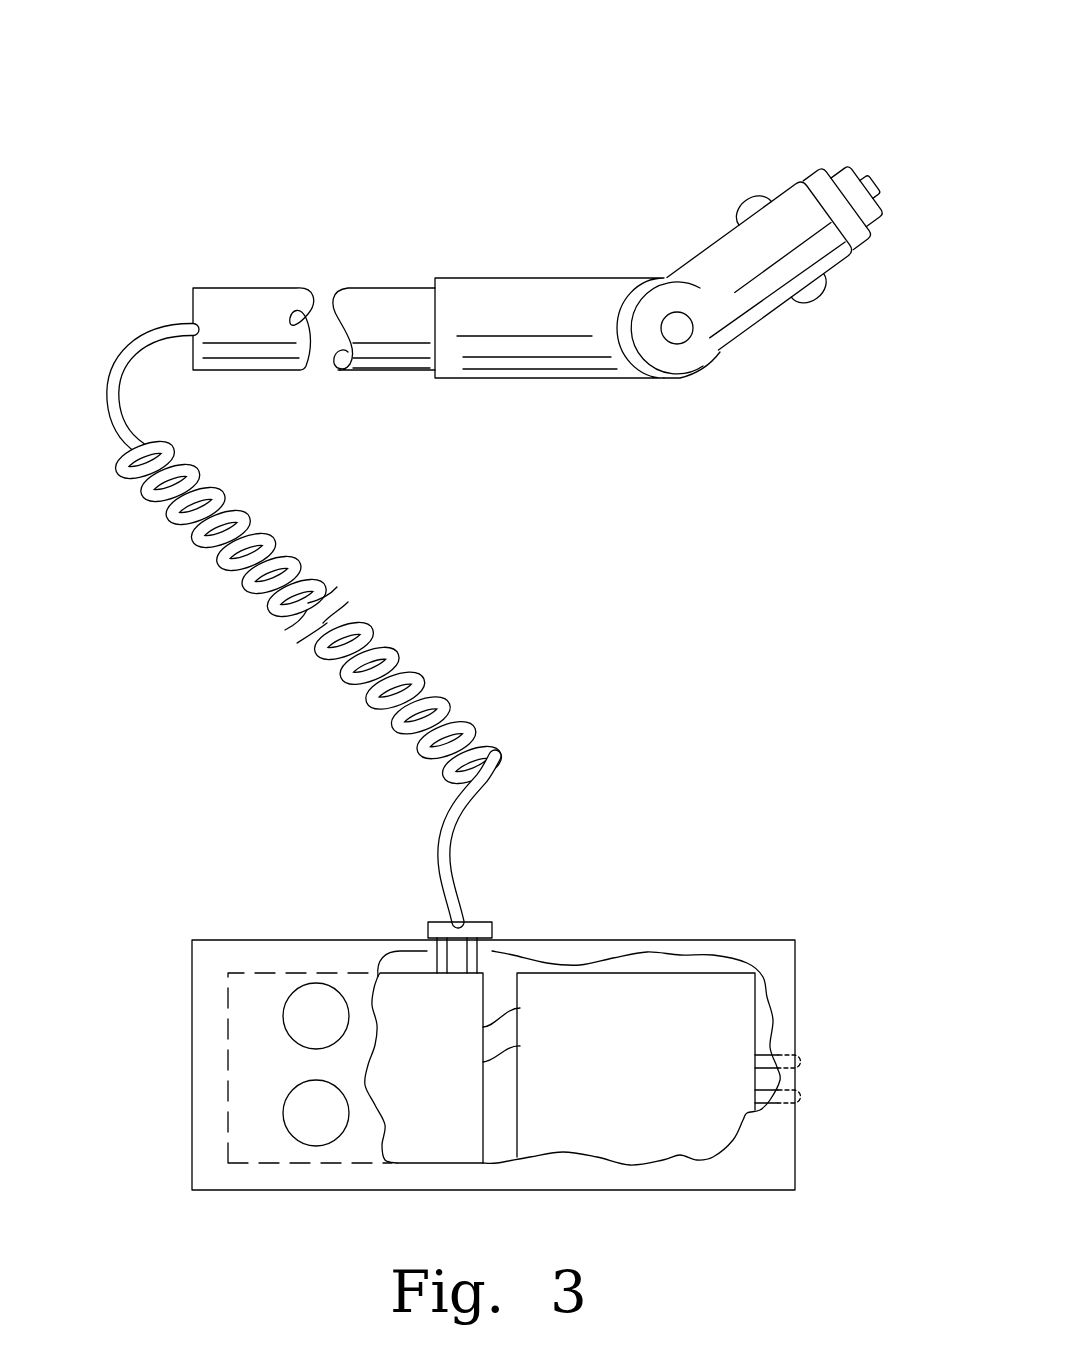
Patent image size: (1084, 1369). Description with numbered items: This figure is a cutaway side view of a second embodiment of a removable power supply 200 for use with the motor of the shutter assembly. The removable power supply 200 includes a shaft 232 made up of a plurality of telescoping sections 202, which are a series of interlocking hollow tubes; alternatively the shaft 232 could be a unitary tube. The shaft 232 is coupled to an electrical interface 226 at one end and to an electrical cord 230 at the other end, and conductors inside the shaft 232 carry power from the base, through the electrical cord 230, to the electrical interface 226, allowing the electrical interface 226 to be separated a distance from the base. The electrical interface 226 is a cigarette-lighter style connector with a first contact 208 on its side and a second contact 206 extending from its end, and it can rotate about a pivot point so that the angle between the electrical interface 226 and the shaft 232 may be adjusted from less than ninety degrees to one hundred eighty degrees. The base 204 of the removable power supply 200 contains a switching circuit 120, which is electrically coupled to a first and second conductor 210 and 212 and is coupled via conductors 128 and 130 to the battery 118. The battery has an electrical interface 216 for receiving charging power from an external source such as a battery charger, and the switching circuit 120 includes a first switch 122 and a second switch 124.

The removable power supply 200 is at (209, 73).
The telescoping sections 202 is at (314, 224).
The base 204 is at (256, 946).
The second contact 206 is at (872, 183).
The first contact 208 is at (752, 207).
The first conductor 210 is at (493, 963).
The second conductor 212 is at (438, 962).
The electrical interface 216 is at (802, 1061).
The electrical interface 226 is at (782, 357).
The electrical cord 230 is at (497, 763).
The shaft 232 is at (427, 421).
The battery 118 is at (677, 990).
The switching circuit 120 is at (457, 1147).
The first switch 122 is at (290, 1017).
The second switch 124 is at (290, 1113).
The conductor 128 is at (520, 1008).
The conductor 130 is at (520, 1046).